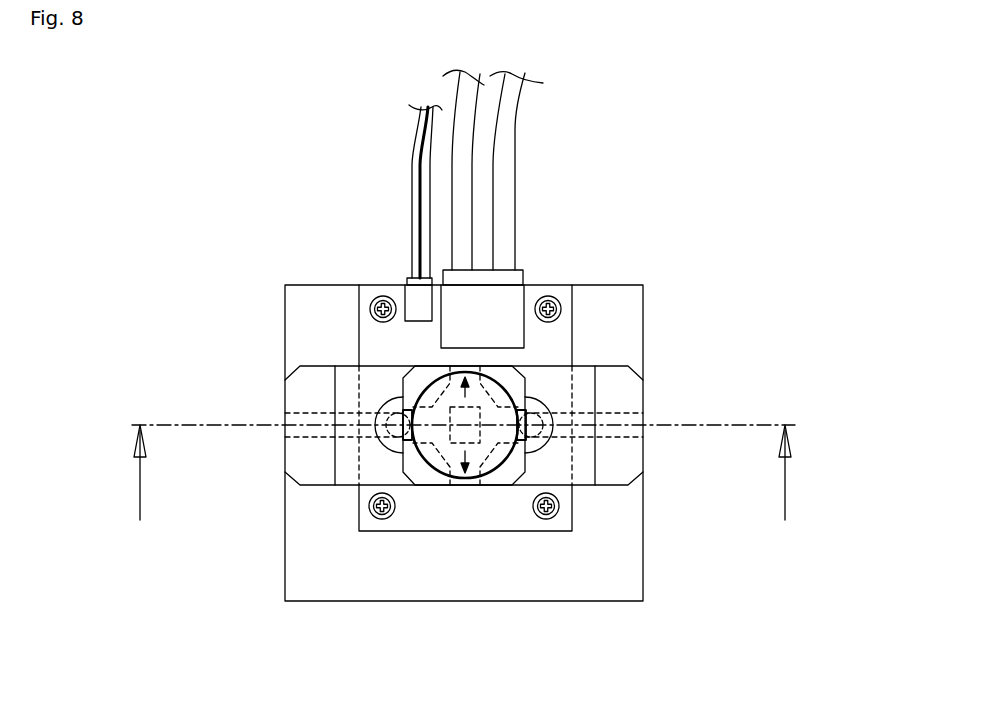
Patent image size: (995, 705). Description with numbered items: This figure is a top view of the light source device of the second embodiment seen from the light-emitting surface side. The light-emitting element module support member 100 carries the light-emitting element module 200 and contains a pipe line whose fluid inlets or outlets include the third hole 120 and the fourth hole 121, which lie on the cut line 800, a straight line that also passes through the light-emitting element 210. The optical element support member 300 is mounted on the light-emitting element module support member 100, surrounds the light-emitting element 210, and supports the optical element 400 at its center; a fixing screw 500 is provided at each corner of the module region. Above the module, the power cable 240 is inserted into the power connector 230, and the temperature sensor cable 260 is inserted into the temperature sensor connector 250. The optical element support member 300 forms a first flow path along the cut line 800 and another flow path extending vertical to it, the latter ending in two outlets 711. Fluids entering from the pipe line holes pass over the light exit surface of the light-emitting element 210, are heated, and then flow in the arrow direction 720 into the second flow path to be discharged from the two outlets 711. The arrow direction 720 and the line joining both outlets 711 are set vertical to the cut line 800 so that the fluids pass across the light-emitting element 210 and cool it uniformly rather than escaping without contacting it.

The light-emitting element module support member 100 is at (293, 342).
The third hole 120 is at (618, 440).
The fourth hole 121 is at (283, 463).
The light-emitting element module 200 is at (515, 517).
The light-emitting element 210 is at (458, 432).
The power connector 230 is at (490, 310).
The power cable 240 is at (503, 212).
The temperature sensor connector 250 is at (422, 298).
The temperature sensor cable 260 is at (413, 149).
The optical element support member 300 is at (620, 397).
The optical element 400 is at (503, 397).
The fixing screw 500 is at (388, 302).
The outlets 711 is at (463, 365).
The arrow direction 720 is at (483, 392).
The cut line 800 is at (230, 423).